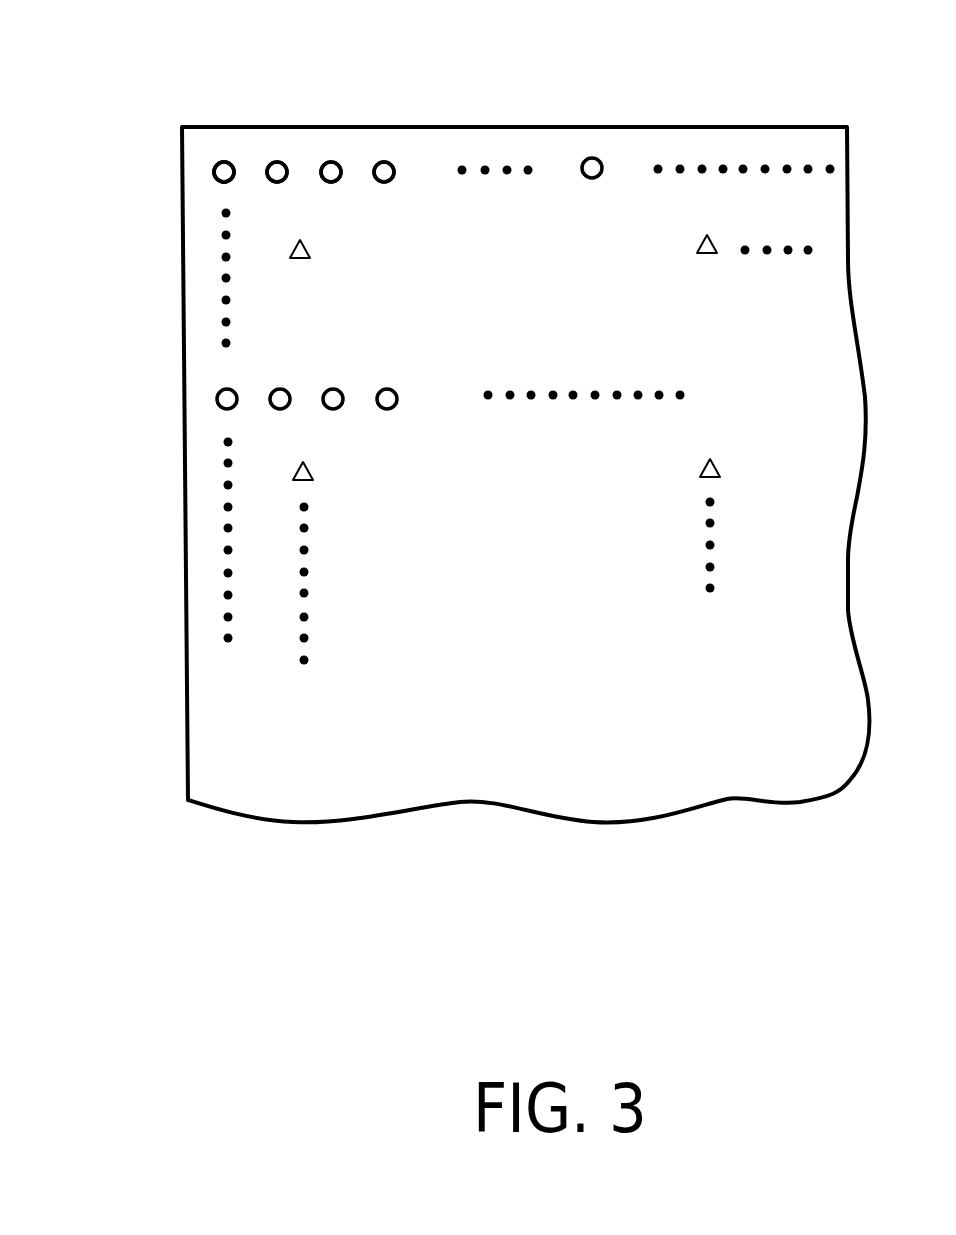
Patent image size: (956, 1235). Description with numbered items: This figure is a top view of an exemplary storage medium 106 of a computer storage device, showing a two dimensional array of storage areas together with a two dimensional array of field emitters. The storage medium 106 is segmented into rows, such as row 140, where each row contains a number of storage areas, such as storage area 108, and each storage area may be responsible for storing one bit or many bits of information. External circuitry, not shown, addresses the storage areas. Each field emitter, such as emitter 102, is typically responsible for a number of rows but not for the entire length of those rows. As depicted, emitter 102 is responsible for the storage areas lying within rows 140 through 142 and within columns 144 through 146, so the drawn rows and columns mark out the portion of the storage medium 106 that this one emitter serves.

The field emitter 102 is at (310, 248).
The storage medium 106 is at (730, 122).
The storage area 108 is at (222, 163).
The row 140 is at (206, 182).
The row 142 is at (206, 407).
The column 144 is at (212, 159).
The column 146 is at (592, 147).